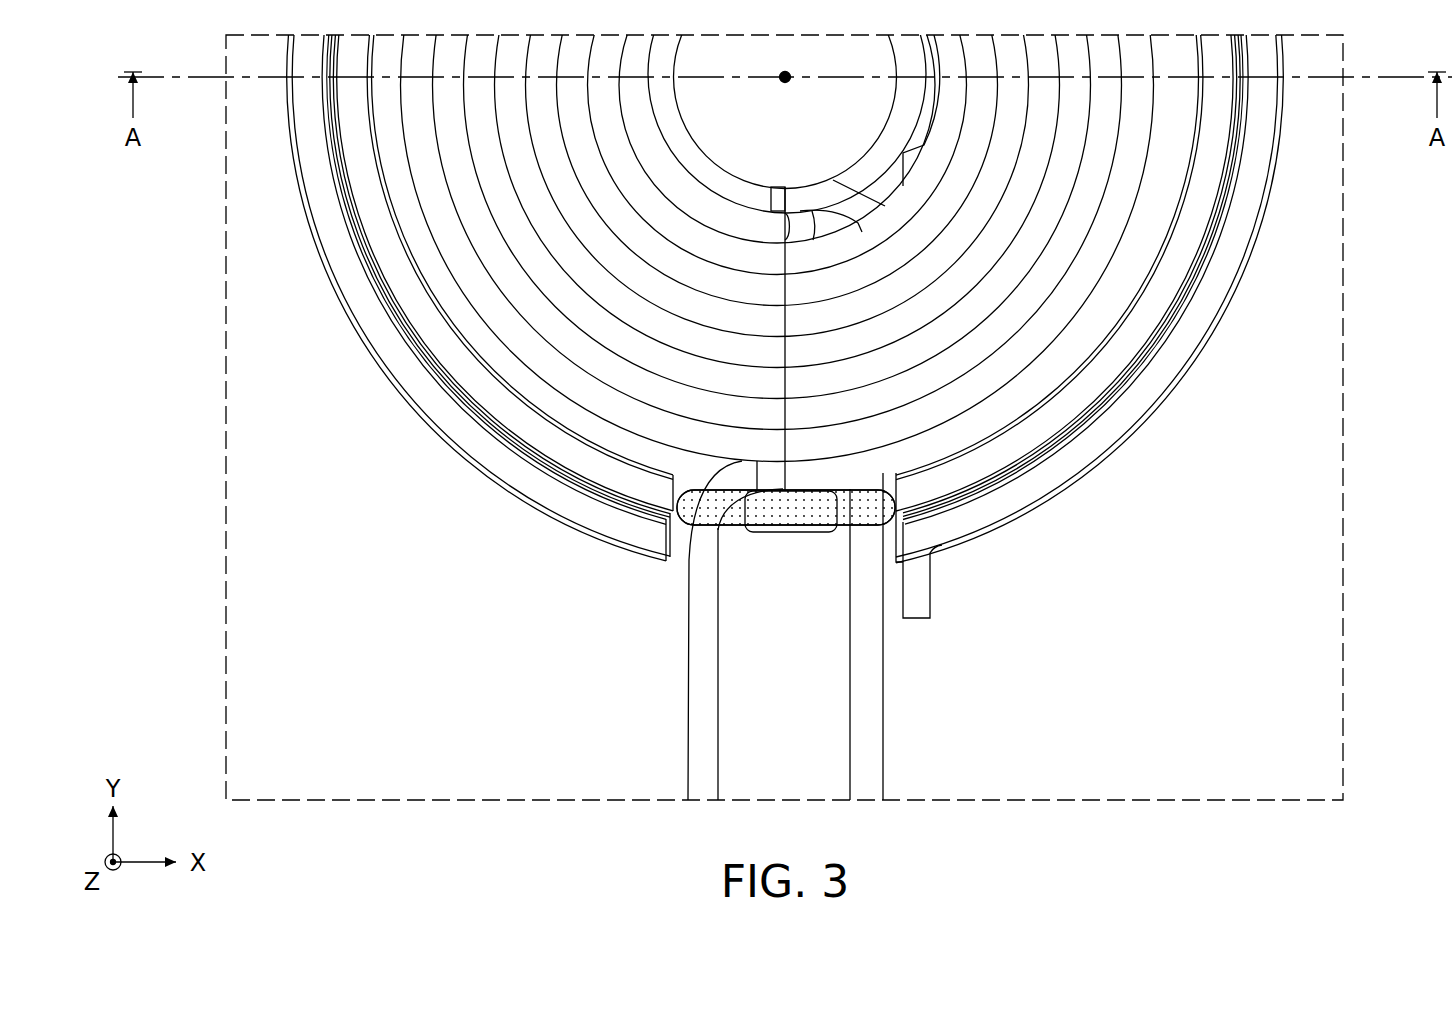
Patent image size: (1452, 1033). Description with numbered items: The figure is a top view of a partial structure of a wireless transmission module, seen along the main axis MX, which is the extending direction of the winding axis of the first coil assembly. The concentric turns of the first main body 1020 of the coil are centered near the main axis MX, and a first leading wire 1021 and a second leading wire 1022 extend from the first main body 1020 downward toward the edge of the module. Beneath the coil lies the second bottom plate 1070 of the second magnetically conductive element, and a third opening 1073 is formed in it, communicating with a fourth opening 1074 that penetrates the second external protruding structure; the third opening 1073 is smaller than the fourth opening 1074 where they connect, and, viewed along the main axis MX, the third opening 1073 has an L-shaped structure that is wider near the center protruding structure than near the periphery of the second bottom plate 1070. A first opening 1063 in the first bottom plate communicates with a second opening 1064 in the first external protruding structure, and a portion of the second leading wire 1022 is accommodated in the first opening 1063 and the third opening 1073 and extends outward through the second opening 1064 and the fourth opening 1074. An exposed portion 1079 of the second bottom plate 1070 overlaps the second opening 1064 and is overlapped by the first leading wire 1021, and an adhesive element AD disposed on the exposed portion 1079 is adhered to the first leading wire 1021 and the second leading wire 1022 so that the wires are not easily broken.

The first main body 1020 is at (1092, 329).
The first leading wire 1021 is at (694, 720).
The second leading wire 1022 is at (878, 720).
The first opening 1063 is at (904, 473).
The second opening 1064 is at (905, 492).
The second bottom plate 1070 is at (786, 507).
The third opening 1073 is at (830, 506).
The fourth opening 1074 is at (680, 553).
The exposed portion 1079 is at (743, 513).
The adhesive element AD is at (767, 520).
The main axis MX is at (806, 64).